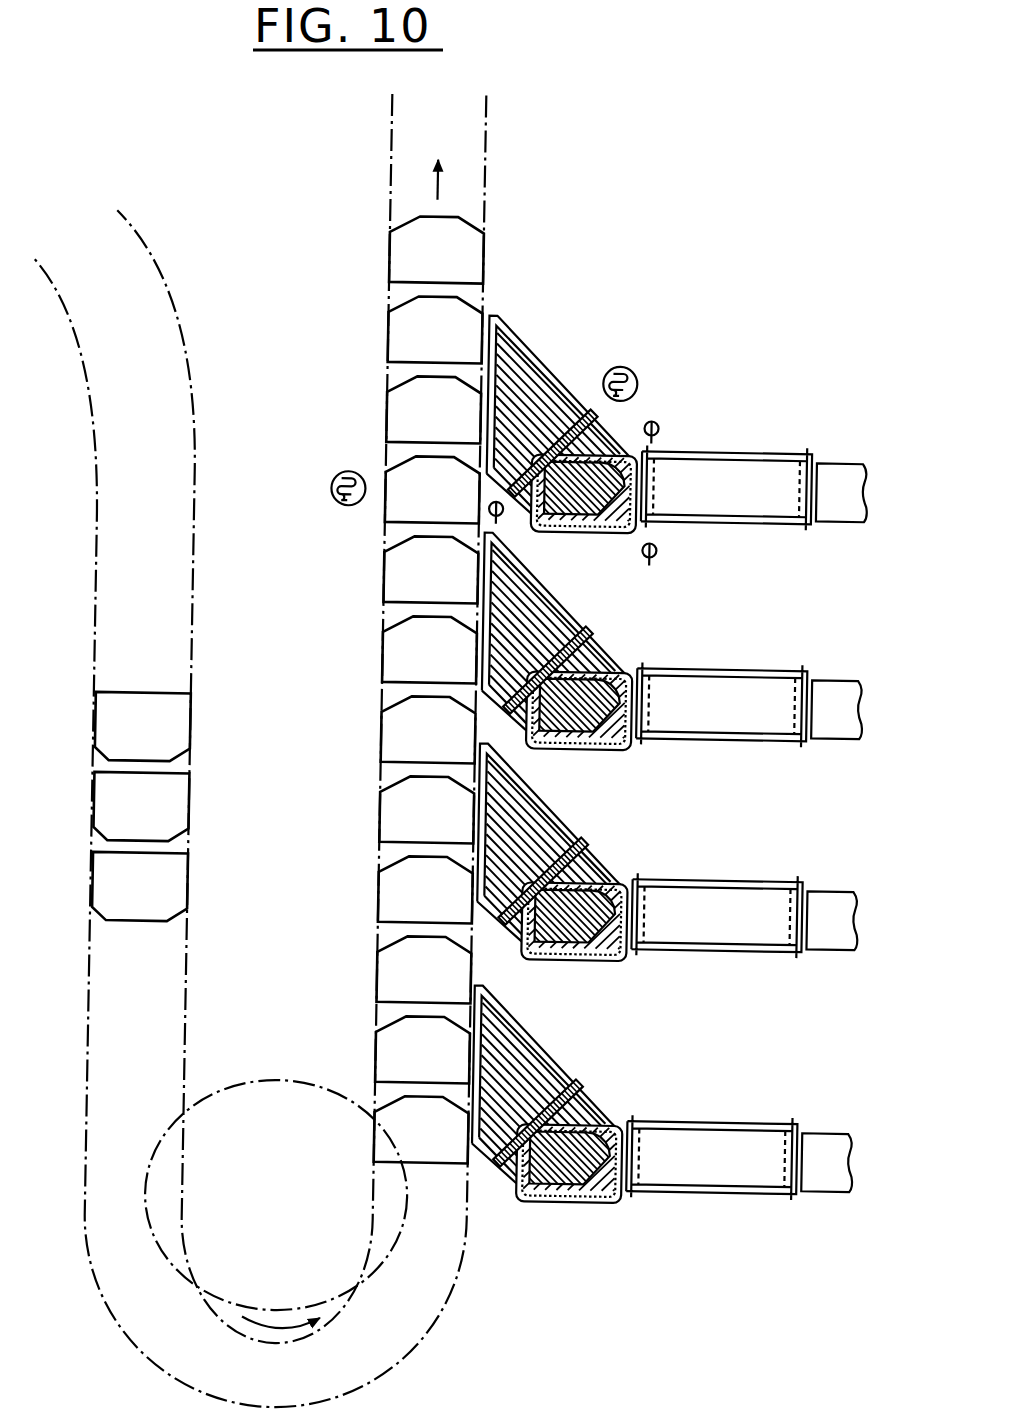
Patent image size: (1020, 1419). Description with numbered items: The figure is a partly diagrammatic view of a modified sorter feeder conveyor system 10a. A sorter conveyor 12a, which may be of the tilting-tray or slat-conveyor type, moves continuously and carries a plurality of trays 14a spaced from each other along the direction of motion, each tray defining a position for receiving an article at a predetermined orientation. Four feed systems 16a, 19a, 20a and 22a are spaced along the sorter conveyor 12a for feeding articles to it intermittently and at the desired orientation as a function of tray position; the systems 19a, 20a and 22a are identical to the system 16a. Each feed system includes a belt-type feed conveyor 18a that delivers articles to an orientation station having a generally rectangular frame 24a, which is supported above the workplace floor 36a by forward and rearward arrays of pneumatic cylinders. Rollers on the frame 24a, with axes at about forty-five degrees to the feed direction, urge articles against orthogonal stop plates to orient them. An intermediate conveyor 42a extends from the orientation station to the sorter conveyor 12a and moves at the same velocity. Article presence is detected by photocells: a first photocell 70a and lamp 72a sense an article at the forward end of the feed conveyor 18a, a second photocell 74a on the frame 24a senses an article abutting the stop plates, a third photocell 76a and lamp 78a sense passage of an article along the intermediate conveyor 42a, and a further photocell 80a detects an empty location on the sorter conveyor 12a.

The sorter feeder conveyor system 10a is at (624, 196).
The sorter conveyor 12a is at (492, 204).
The trays 14a is at (393, 264).
The feed system 16a is at (617, 436).
The feed conveyor 18a is at (750, 478).
The feed system 19a is at (609, 642).
The feed system 20a is at (627, 855).
The feed system 22a is at (590, 1073).
The frame 24a is at (593, 516).
The workplace floor 36a is at (646, 492).
The intermediate conveyor 42a is at (560, 404).
The first photocell 70a is at (696, 420).
The lamp 72a is at (693, 559).
The second photocell 74a is at (572, 650).
The third photocell 76a is at (664, 379).
The lamp 78a is at (543, 490).
The photocell 80a is at (351, 508).